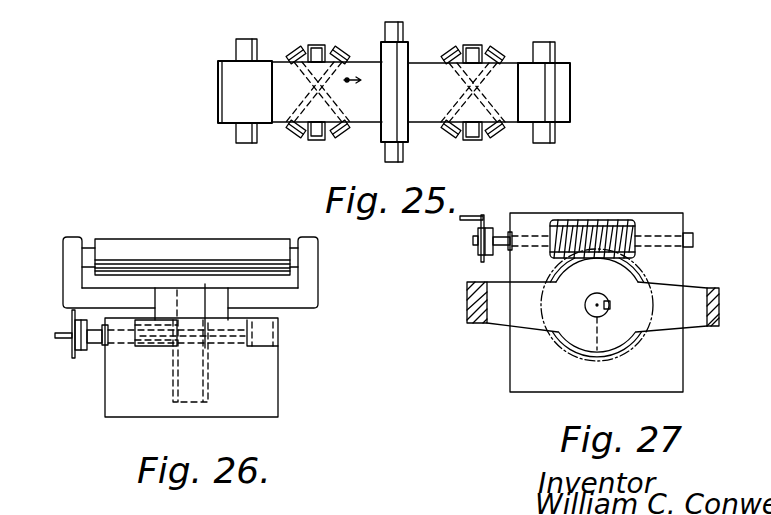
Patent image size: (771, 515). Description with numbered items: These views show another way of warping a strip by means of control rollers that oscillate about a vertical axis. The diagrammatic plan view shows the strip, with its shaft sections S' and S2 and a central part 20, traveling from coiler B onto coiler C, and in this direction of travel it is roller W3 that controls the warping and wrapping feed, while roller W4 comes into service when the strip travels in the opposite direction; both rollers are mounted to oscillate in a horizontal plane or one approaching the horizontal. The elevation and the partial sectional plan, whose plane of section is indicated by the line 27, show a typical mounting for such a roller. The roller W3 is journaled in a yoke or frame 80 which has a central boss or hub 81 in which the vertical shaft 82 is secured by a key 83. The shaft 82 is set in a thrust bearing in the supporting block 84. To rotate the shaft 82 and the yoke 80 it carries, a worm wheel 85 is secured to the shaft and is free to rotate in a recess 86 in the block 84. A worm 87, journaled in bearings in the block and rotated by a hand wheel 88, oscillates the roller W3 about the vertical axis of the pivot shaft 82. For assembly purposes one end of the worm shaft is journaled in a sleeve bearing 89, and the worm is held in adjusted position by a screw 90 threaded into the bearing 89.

In FIG. 25, the coiler B is at (226, 54).
In FIG. 25, the shaft section S' is at (275, 37).
In FIG. 25, the control roller W3 is at (321, 45).
In FIG. 26, the control roller W3 is at (176, 243).
In FIG. 25, the central bearing block 20 is at (411, 52).
In FIG. 25, the control roller W4 is at (478, 45).
In FIG. 25, the shaft section S2 is at (514, 63).
In FIG. 25, the coiler C is at (556, 57).
In FIG. 26, the section line 27 is at (53, 284).
In FIG. 26, the yoke or frame 80 is at (318, 300).
In FIG. 27, the yoke or frame 80 is at (505, 318).
In FIG. 26, the central boss or hub 81 is at (215, 302).
In FIG. 27, the central boss or hub 81 is at (590, 340).
In FIG. 26, the vertical shaft 82 is at (208, 388).
In FIG. 27, the vertical shaft 82 is at (605, 300).
In FIG. 26, the key 83 is at (208, 287).
In FIG. 27, the key 83 is at (609, 309).
In FIG. 26, the supporting block 84 is at (278, 390).
In FIG. 27, the supporting block 84 is at (683, 364).
In FIG. 26, the worm wheel 85 is at (248, 334).
In FIG. 27, the worm wheel 85 is at (626, 344).
In FIG. 26, the recess 86 is at (240, 346).
In FIG. 27, the recess 86 is at (603, 357).
In FIG. 27, the worm 87 is at (611, 220).
In FIG. 26, the hand wheel 88 is at (73, 358).
In FIG. 27, the hand wheel 88 is at (486, 226).
In FIG. 27, the sleeve bearing 89 is at (660, 222).
In FIG. 27, the screw 90 is at (694, 240).